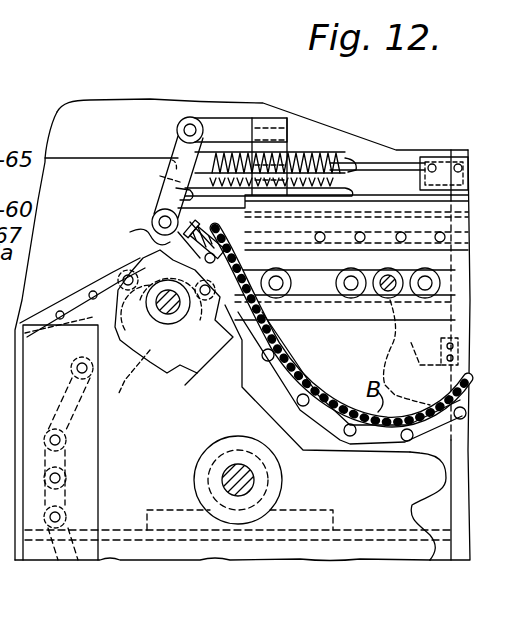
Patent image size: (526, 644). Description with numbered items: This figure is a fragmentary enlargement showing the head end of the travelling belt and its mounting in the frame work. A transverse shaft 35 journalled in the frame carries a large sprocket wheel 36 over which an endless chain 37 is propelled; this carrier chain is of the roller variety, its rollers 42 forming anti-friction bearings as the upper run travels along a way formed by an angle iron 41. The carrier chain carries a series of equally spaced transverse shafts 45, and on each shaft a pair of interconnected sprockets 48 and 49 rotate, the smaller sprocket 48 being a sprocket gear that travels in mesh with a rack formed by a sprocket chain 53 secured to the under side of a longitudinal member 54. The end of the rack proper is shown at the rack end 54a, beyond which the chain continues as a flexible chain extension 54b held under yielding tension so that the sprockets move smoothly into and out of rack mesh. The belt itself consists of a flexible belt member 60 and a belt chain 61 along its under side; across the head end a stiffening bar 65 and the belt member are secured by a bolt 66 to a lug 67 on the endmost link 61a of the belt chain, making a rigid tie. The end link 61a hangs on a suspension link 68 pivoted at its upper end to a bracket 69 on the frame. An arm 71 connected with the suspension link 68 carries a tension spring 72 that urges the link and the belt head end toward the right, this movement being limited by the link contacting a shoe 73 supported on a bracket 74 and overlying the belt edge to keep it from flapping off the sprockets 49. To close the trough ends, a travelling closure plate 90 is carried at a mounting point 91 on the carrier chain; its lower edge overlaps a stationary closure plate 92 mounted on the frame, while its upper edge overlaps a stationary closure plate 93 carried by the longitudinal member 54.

The transverse shaft 35 is at (238, 480).
The sprocket wheel 36 is at (418, 560).
The endless chain 37 is at (310, 305).
The angle iron 41 is at (432, 312).
The roller 42 is at (350, 298).
The shaft 45 is at (166, 320).
The sprocket 48 is at (132, 386).
The sprocket 49 is at (178, 378).
The sprocket chain 53 is at (342, 245).
The longitudinal member 54 is at (418, 240).
The rack end 54a is at (264, 200).
The chain extension 54b is at (82, 296).
The flexible belt member 60 is at (318, 398).
The belt chain 61 is at (385, 440).
The endmost link 61a is at (128, 253).
The stiffening bar 65 is at (180, 206).
The bolt 66 is at (209, 228).
The lug 67 is at (135, 227).
The suspension link 68 is at (172, 196).
The bracket 69 is at (220, 130).
The arm 71 is at (170, 168).
The tension spring 72 is at (310, 158).
The shoe 73 is at (352, 178).
The bracket 74 is at (285, 152).
The travelling closure plate 90 is at (90, 514).
The mounting point 91 is at (395, 305).
The stationary closure plate 92 is at (268, 396).
The stationary closure plate 93 is at (436, 193).